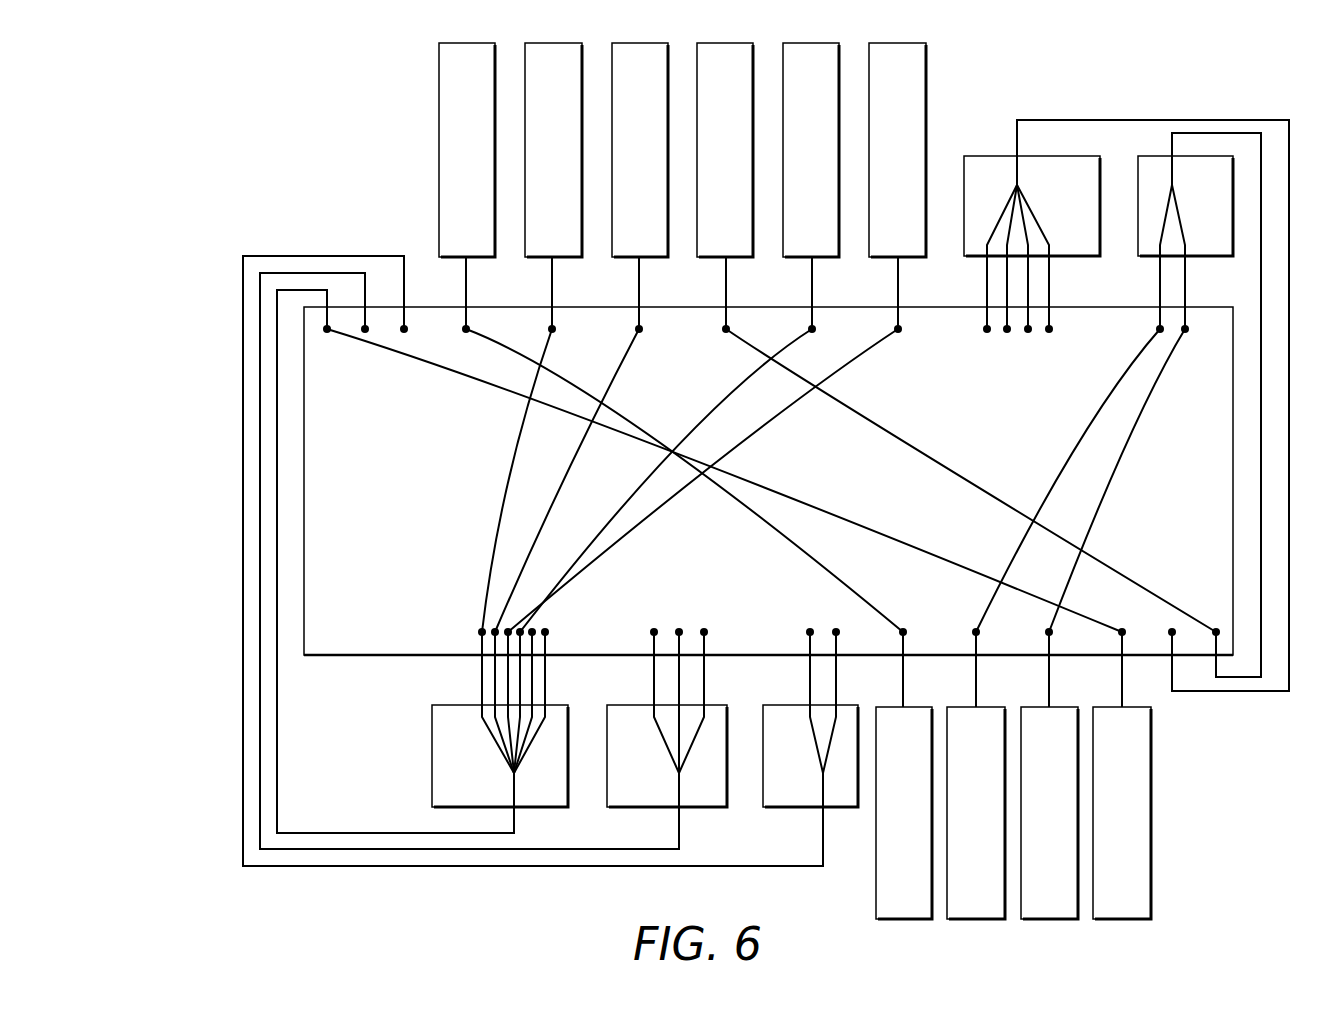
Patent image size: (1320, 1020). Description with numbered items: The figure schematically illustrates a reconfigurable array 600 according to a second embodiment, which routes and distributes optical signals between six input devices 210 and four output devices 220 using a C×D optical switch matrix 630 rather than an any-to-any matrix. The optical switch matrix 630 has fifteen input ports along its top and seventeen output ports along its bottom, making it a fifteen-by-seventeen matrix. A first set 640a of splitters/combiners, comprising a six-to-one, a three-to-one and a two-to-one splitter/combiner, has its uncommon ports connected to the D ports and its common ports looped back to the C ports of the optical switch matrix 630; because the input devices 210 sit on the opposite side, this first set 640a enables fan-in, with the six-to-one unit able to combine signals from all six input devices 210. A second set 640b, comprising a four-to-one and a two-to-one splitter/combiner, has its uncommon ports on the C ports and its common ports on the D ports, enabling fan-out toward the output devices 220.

The reconfigurable array 600 is at (160, 94).
The input devices 210 is at (407, 74).
The output devices 220 is at (1172, 887).
The C×D optical switch matrix 630 is at (356, 491).
The first set of splitters/combiners 640a is at (500, 888).
The second set of splitters/combiners 640b is at (1160, 98).